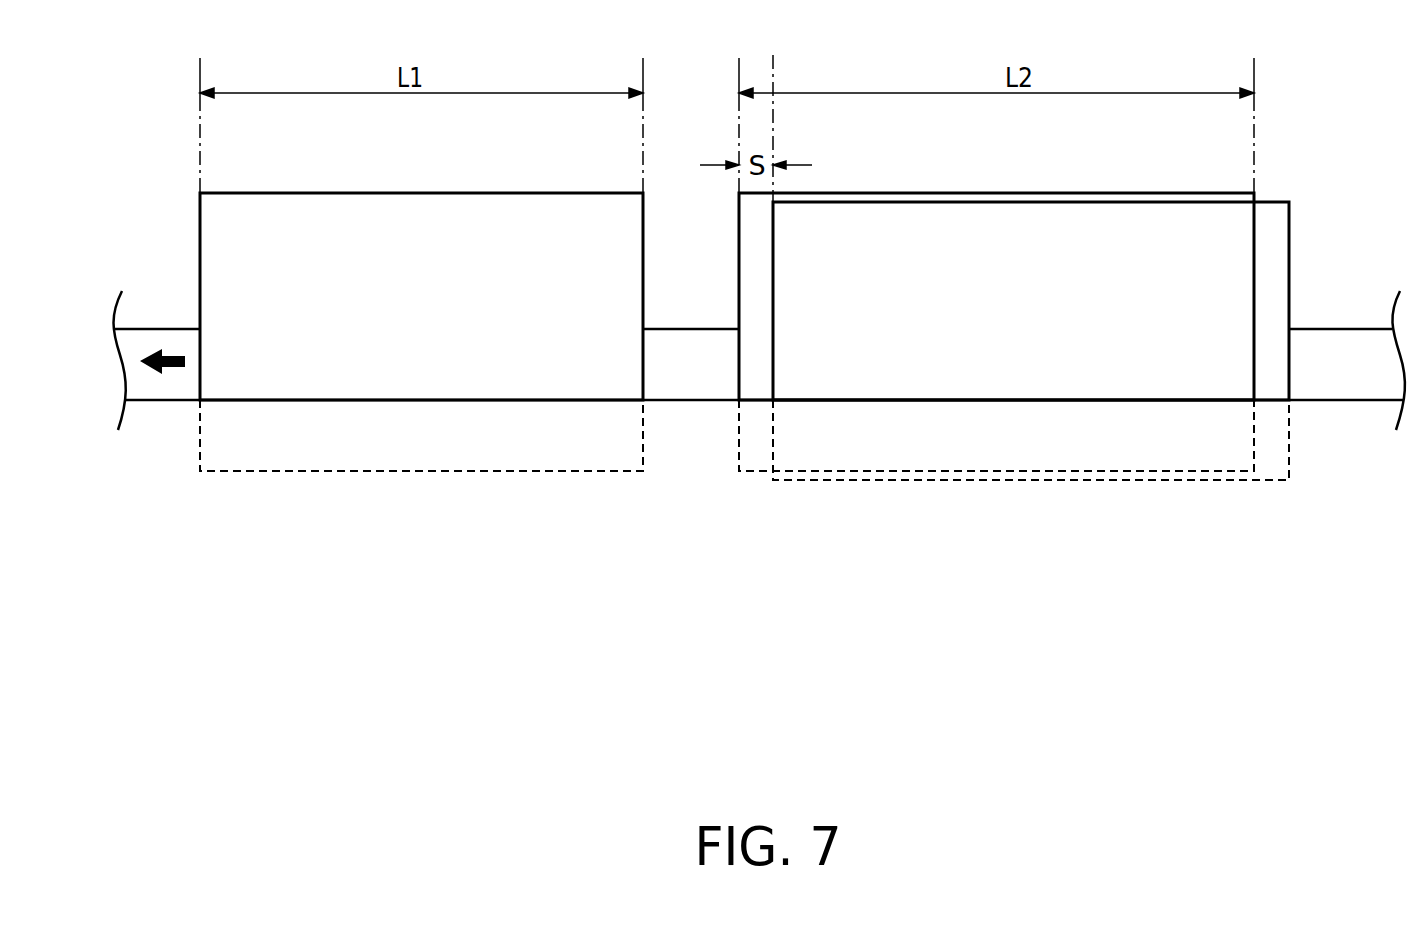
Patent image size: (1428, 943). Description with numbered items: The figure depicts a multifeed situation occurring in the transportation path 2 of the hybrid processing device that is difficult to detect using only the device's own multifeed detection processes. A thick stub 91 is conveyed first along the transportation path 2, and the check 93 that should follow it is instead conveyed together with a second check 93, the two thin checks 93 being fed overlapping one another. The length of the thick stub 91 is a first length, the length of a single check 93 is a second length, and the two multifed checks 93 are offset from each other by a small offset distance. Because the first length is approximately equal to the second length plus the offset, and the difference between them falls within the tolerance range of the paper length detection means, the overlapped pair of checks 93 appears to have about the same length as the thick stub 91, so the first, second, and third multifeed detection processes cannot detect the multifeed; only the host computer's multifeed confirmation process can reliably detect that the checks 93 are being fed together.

The pipe 2 is at (690, 378).
The thick stub 91 is at (216, 226).
The check 93 is at (1207, 202).